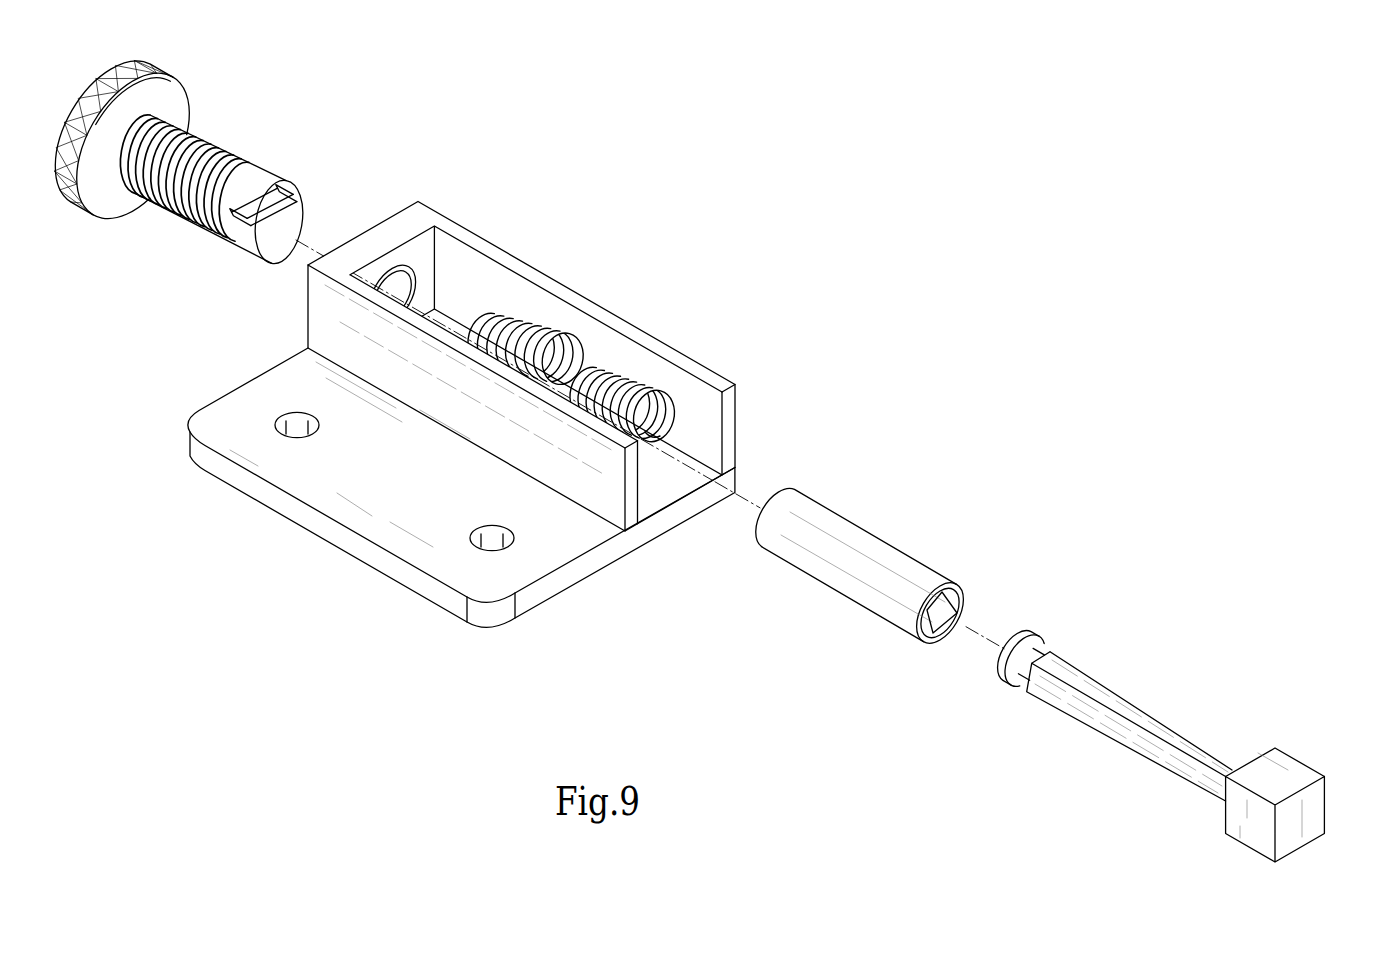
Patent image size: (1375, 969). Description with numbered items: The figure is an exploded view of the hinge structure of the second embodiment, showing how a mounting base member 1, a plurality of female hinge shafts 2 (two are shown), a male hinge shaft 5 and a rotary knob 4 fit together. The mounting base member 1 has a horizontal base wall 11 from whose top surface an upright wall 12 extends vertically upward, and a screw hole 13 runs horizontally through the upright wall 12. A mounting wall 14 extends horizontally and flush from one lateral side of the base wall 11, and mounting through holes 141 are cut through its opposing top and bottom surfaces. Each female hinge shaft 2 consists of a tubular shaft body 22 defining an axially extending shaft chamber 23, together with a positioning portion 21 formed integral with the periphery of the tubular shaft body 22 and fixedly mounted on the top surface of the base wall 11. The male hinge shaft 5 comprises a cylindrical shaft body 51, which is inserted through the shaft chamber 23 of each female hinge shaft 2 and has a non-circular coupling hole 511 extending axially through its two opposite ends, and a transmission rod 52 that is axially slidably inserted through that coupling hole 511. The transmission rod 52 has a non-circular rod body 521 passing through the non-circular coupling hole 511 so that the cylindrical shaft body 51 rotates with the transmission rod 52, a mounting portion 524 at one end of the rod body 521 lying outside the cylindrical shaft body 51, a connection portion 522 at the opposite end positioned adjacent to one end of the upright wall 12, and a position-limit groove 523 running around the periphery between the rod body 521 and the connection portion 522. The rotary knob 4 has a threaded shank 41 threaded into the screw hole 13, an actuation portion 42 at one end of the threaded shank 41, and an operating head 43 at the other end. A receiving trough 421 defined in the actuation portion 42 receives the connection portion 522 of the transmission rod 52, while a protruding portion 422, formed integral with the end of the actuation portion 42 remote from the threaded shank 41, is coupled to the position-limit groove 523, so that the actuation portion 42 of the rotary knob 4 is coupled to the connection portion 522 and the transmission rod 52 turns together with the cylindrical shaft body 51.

The mounting base member 1 is at (469, 402).
The horizontal base wall 11 is at (681, 480).
The upright wall 12 is at (529, 344).
The screw hole 13 is at (410, 278).
The mounting wall 14 is at (461, 502).
The mounting through hole 141 is at (310, 436).
The female hinge shaft 2 is at (623, 399).
The positioning portion 21 is at (648, 470).
The tubular shaft body 22 is at (562, 338).
The shaft chamber 23 is at (573, 355).
The rotary knob 4 is at (214, 182).
The threaded shank 41 is at (155, 182).
The actuation portion 42 is at (246, 209).
The receiving trough 421 is at (276, 187).
The protruding portion 422 is at (285, 196).
The operating head 43 is at (72, 205).
The male hinge shaft 5 is at (1057, 663).
The cylindrical shaft body 51 is at (864, 598).
The non-circular coupling hole 511 is at (930, 636).
The transmission rod 52 is at (1142, 719).
The non-circular rod body 521 is at (1102, 683).
The connection portion 522 is at (1030, 643).
The position-limit groove 523 is at (1018, 682).
The mounting portion 524 is at (1288, 770).